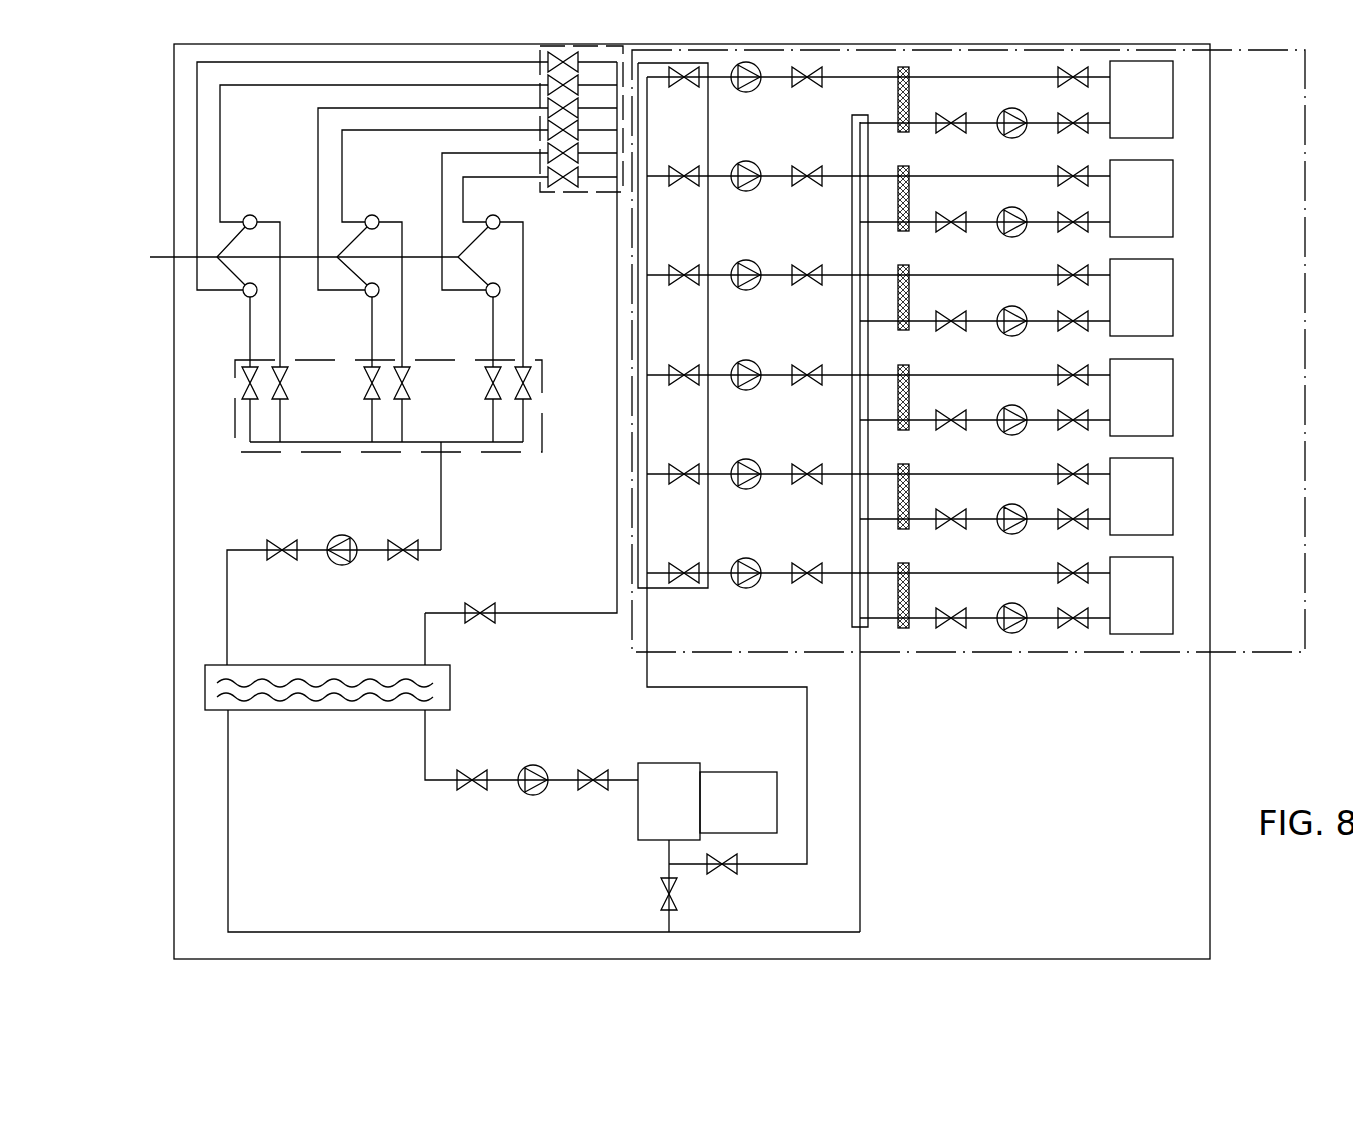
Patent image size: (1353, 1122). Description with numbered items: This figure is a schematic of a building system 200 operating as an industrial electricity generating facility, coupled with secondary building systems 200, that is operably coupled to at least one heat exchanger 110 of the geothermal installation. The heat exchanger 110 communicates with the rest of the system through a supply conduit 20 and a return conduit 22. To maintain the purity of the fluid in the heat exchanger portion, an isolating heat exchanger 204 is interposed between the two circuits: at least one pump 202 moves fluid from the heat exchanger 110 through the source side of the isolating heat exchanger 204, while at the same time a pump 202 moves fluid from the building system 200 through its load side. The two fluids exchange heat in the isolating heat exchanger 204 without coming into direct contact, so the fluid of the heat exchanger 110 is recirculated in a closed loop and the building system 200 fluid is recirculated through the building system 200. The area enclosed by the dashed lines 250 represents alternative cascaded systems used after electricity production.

The building system 200 is at (150, 508).
The dashed lines 250 is at (1276, 652).
The supply conduit 20 is at (617, 503).
The heat exchanger 110 is at (314, 291).
The return conduit 22 is at (441, 480).
The pump 202 is at (342, 565).
The isolating heat exchanger 204 is at (327, 710).